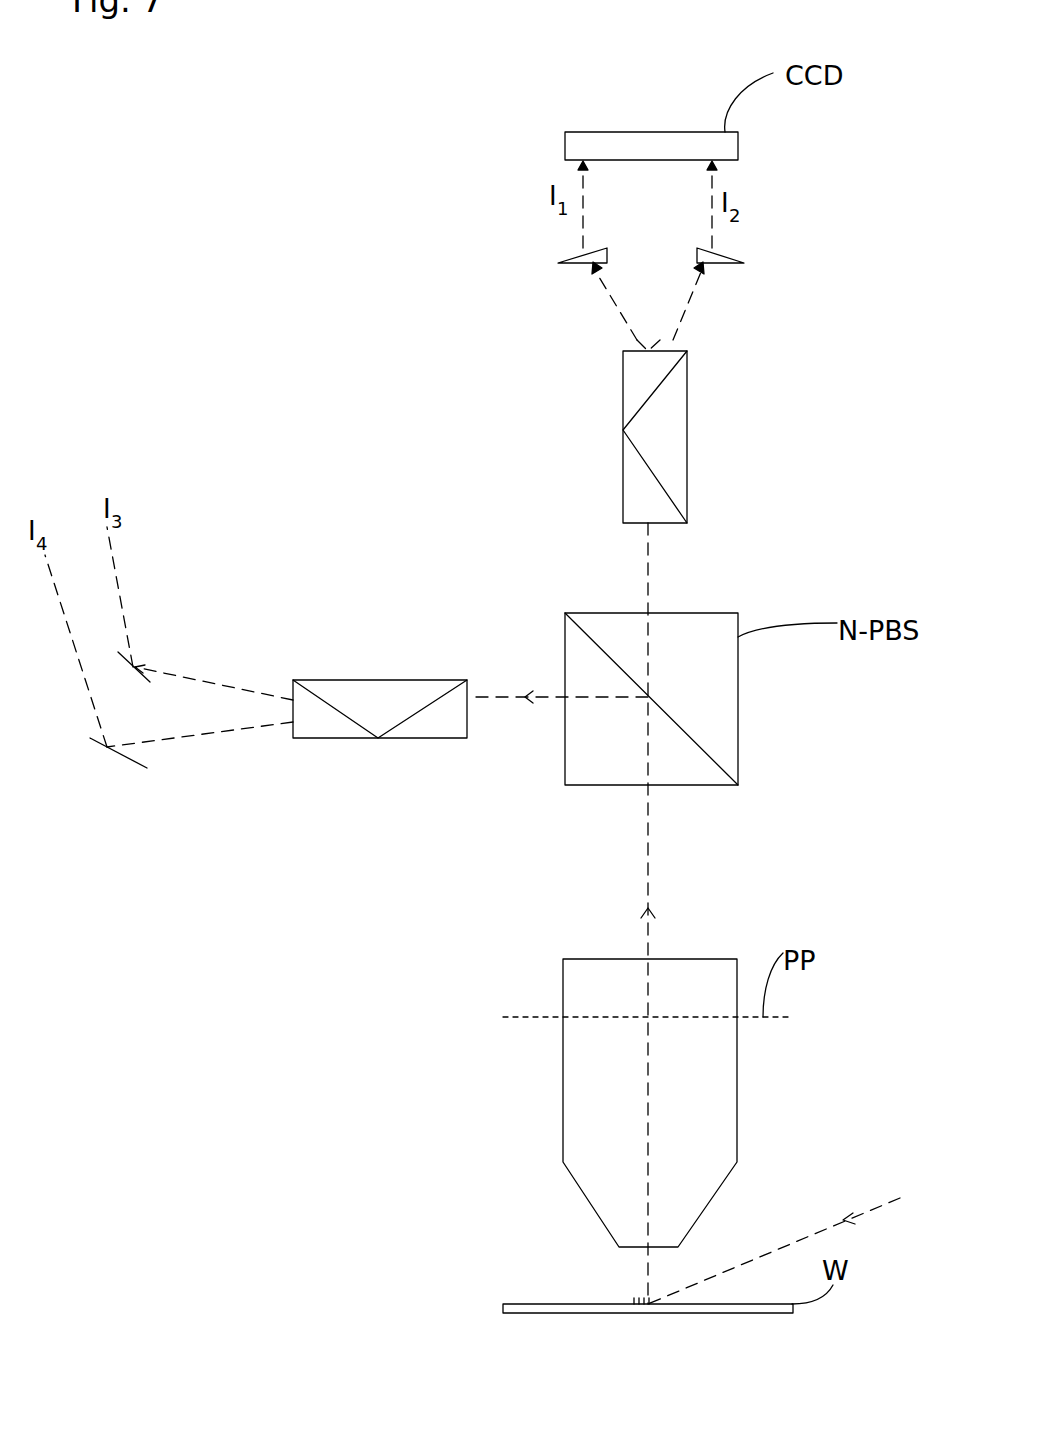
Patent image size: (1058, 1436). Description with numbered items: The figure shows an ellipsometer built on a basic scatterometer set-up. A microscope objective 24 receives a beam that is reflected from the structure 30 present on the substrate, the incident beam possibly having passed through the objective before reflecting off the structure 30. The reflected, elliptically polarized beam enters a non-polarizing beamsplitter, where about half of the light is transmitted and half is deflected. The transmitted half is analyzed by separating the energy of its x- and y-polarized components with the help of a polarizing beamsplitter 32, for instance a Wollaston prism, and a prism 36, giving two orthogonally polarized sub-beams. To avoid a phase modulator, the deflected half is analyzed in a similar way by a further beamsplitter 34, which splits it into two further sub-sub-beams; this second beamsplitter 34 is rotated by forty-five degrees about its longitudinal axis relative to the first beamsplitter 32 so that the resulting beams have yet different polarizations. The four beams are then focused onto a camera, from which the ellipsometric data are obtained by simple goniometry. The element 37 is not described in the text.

The microscope objective 24 is at (737, 1092).
The structure 30 is at (648, 1313).
The polarizing beamsplitter 32 is at (671, 442).
The further beamsplitter 34 is at (390, 715).
The prism 36 is at (744, 252).
The mirror 37 is at (133, 762).